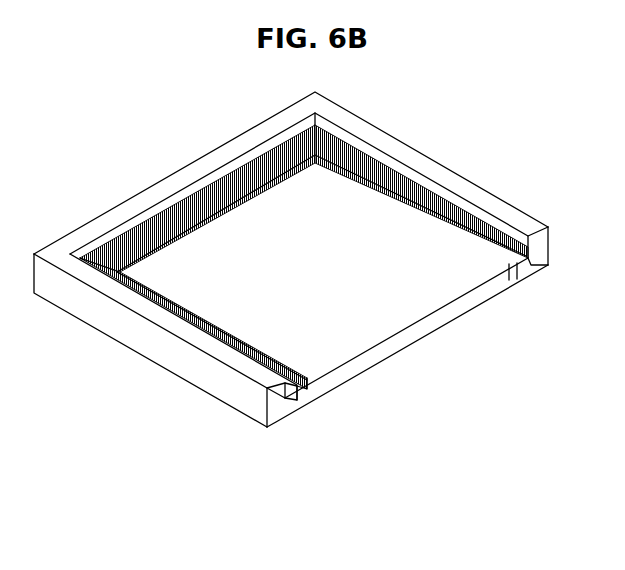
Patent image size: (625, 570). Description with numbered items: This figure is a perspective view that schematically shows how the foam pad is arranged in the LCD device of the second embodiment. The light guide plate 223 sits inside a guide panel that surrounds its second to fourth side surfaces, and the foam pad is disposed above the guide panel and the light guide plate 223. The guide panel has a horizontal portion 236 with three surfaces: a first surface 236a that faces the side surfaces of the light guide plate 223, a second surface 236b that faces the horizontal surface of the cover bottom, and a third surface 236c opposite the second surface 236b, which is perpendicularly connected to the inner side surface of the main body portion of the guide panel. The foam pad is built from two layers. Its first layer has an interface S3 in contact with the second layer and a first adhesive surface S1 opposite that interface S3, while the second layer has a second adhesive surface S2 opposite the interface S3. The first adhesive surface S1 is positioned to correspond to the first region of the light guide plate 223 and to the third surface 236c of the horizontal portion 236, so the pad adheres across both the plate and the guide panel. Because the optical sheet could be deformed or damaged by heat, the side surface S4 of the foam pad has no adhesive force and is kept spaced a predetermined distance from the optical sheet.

The light guide plate 223 is at (338, 274).
The horizontal portion 236 is at (390, 400).
The first surface 236a is at (304, 397).
The second surface 236b is at (287, 405).
The third surface 236c is at (297, 403).
The first adhesive surface S1 is at (510, 270).
The second adhesive surface S2 is at (489, 217).
The interface S3 is at (549, 252).
The side surface S4 is at (450, 240).